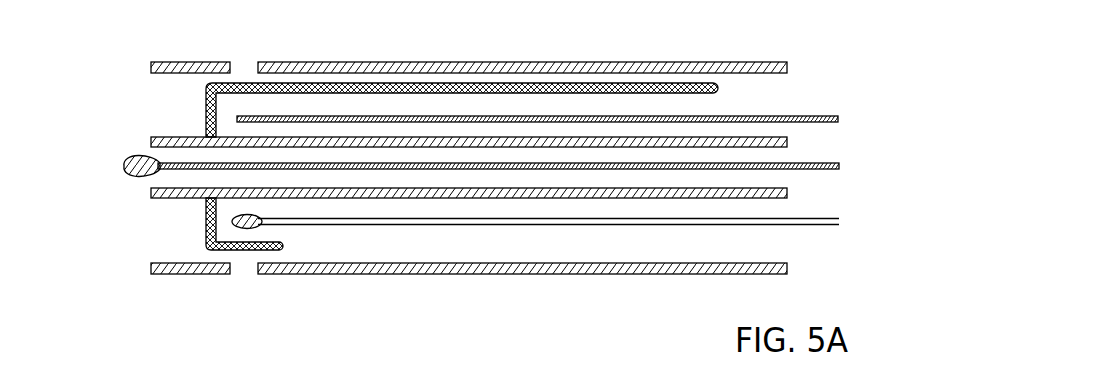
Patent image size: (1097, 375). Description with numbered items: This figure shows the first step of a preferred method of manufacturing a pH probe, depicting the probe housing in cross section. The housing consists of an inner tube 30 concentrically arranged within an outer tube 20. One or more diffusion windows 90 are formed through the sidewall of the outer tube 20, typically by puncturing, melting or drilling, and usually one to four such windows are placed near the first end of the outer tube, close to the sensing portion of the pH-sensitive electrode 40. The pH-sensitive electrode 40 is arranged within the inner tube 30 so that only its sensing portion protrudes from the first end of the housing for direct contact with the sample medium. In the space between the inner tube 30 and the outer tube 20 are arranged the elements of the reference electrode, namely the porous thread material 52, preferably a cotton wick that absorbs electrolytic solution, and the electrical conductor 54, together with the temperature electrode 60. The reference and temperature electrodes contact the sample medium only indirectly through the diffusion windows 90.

The outer tube 20 is at (797, 64).
The inner tube 30 is at (138, 137).
The pH-sensitive electrode 40 is at (817, 173).
The porous thread material 52 is at (612, 80).
The electrical conductor 54 is at (722, 115).
The temperature electrode 60 is at (818, 226).
The diffusion windows 90 is at (243, 63).